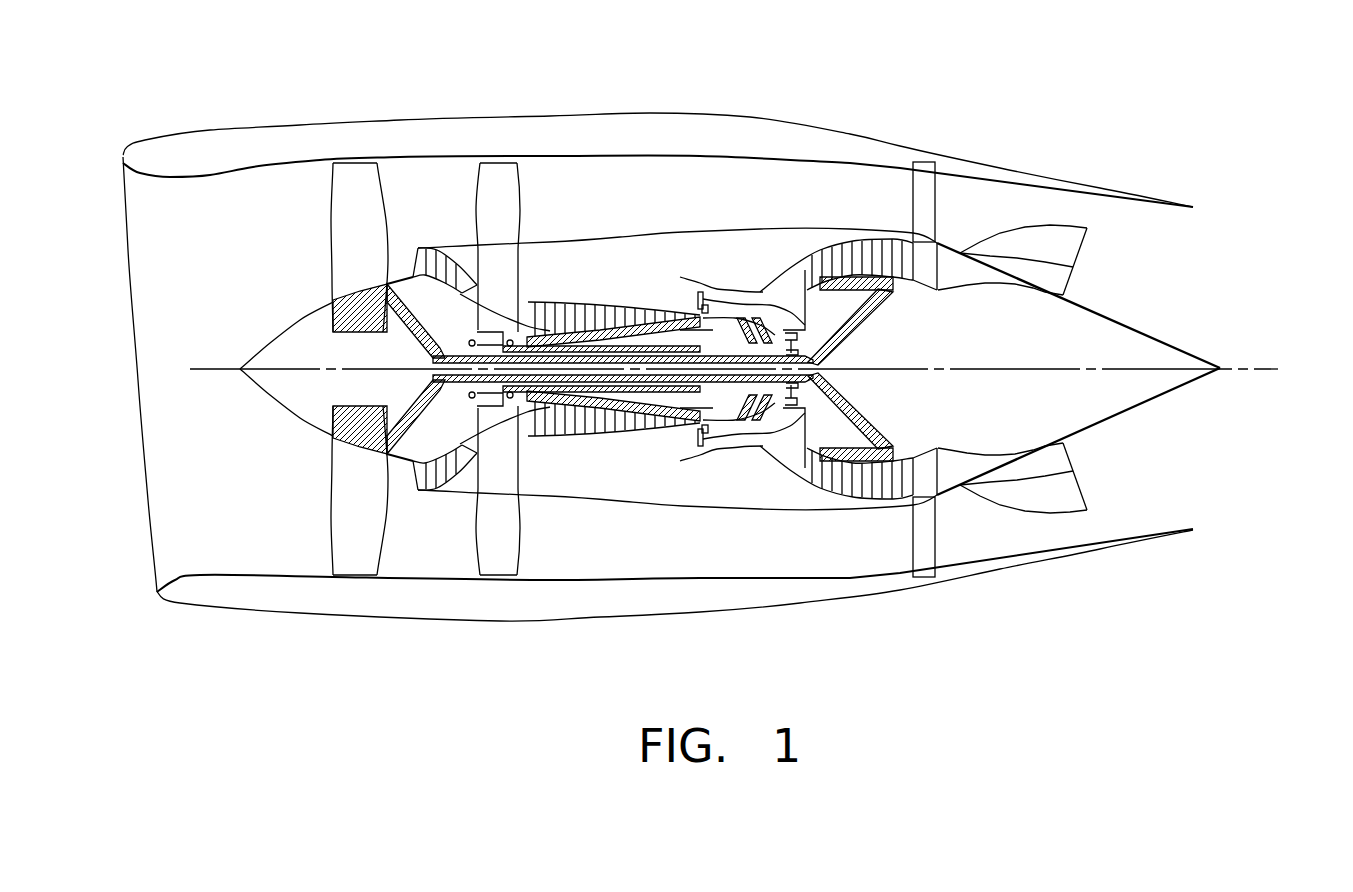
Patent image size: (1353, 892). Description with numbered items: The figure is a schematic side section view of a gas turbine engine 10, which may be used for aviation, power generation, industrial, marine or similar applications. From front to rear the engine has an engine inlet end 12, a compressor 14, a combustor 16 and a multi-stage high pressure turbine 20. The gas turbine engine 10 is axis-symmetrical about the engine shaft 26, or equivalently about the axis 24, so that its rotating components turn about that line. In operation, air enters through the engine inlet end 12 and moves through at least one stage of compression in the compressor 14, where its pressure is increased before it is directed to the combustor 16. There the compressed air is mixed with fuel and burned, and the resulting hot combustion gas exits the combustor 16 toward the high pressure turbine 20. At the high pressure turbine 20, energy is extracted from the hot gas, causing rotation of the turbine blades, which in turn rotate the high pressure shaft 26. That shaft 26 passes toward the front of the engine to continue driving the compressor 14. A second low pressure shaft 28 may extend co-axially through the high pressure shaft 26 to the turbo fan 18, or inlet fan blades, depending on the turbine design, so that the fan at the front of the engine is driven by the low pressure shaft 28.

The gas turbine engine 10 is at (960, 83).
The engine inlet end 12 is at (160, 248).
The compressor 14 is at (571, 279).
The combustor 16 is at (726, 274).
The turbo fan 18 is at (310, 159).
The multi-stage high pressure turbine 20 is at (779, 267).
The axis 24 is at (1278, 369).
The high pressure shaft 26 is at (688, 320).
The low pressure shaft 28 is at (653, 385).